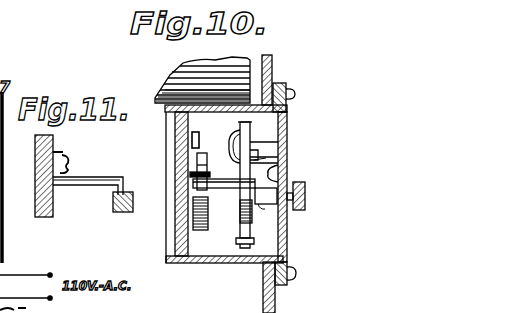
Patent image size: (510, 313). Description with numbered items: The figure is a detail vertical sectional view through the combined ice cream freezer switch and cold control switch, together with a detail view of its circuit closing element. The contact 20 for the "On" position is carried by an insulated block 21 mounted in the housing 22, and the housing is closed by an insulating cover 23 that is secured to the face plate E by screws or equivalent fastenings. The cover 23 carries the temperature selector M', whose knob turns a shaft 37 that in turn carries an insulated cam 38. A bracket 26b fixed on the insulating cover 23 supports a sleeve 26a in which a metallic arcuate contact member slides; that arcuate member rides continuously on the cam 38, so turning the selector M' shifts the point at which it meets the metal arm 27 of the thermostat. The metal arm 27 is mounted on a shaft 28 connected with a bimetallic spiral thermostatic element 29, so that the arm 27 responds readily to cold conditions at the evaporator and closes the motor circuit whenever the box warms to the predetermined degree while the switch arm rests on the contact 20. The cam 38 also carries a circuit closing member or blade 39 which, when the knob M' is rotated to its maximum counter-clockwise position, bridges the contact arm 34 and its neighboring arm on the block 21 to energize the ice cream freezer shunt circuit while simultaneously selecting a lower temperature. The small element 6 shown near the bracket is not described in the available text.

In FIG. 10, the face plate E is at (276, 62).
In FIG. 11, the hook 6 is at (71, 153).
In FIG. 10, the contact 20 is at (201, 131).
In FIG. 10, the insulated block 21 is at (181, 134).
In FIG. 11, the insulated block 21 is at (53, 210).
In FIG. 10, the housing 22 is at (222, 264).
In FIG. 10, the insulating cover 23 is at (287, 232).
In FIG. 10, the sleeve 26a is at (286, 123).
In FIG. 10, the bracket 26b is at (264, 139).
In FIG. 10, the metal arm 27 is at (268, 161).
In FIG. 10, the shaft 28 is at (225, 190).
In FIG. 10, the bimetallic spiral thermostatic element 29 is at (185, 157).
In FIG. 11, the contact arm 34 is at (100, 177).
In FIG. 10, the shaft 37 is at (260, 207).
In FIG. 10, the insulated cam 38 is at (245, 220).
In FIG. 10, the circuit closing member or blade 39 is at (257, 239).
In FIG. 11, the circuit closing member or blade 39 is at (120, 212).
In FIG. 10, the temperature selector M' is at (311, 187).